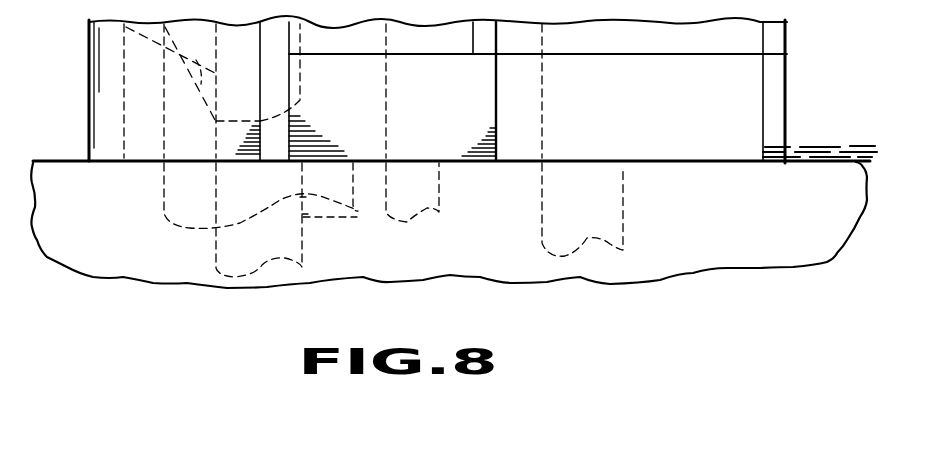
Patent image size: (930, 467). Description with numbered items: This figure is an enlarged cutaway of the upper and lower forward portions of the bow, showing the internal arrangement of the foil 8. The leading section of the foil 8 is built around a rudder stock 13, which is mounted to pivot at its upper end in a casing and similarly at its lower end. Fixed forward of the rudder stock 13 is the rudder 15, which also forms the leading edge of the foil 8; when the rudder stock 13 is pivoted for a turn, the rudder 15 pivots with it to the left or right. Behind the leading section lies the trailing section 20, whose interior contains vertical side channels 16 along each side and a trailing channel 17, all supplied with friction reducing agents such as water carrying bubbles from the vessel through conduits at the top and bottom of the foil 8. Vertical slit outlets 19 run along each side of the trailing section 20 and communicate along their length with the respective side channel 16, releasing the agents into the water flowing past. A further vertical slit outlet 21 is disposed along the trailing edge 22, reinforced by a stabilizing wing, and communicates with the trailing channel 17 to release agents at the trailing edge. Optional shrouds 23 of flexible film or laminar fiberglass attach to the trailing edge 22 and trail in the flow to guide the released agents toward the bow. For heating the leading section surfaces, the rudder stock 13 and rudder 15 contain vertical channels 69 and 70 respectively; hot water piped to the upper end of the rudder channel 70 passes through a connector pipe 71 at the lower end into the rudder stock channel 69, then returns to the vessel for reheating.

The foil 8 is at (365, 142).
The rudder stock 13 is at (162, 139).
The rudder 15 is at (86, 92).
The vertical side channels 16 is at (387, 76).
The trailing channel 17 is at (543, 109).
The vertical slit outlets 19 is at (496, 94).
The trailing section 20 is at (667, 140).
The vertical slit outlet 21 is at (787, 88).
The trailing edge 22 is at (762, 87).
The shrouds 23 is at (853, 130).
The rudder stock channel 69 is at (217, 44).
The rudder channel 70 is at (151, 107).
The connector pipe 71 is at (212, 91).